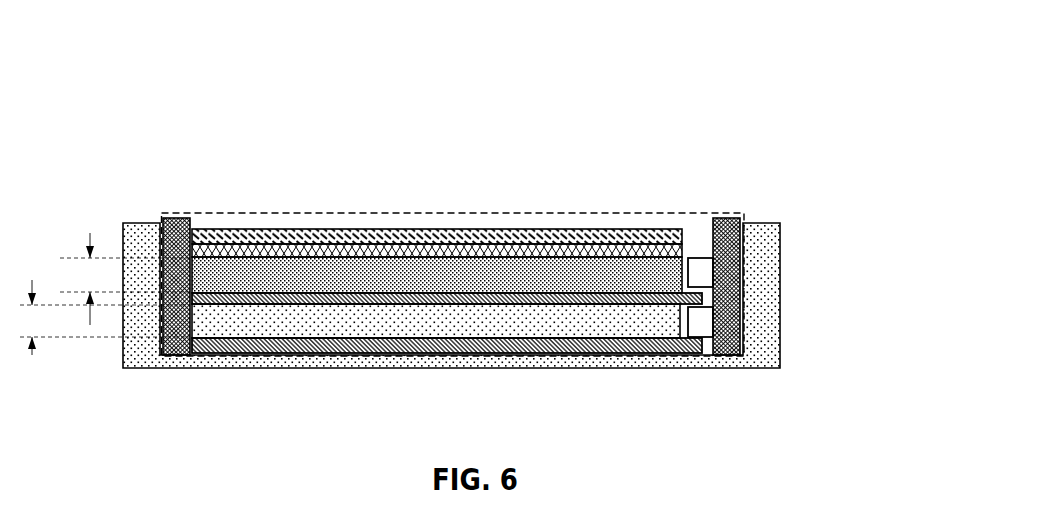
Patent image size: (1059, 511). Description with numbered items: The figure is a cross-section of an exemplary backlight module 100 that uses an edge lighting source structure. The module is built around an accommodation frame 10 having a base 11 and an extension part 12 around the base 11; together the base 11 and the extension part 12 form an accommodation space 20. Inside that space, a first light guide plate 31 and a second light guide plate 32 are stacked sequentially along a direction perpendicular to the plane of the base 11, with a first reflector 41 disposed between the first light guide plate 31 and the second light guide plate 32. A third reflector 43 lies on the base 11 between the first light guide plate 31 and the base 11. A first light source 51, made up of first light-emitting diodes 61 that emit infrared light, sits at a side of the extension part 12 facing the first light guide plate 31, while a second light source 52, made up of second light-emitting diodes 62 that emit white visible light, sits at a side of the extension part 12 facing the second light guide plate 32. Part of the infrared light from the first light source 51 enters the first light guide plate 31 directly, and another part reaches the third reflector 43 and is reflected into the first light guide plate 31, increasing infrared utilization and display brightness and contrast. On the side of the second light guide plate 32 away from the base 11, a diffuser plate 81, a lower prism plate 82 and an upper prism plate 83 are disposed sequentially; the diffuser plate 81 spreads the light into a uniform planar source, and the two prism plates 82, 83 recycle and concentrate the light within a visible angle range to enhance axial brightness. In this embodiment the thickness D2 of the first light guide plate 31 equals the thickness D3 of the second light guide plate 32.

The backlight module 100 is at (727, 42).
The accommodation frame 10 is at (518, 323).
The base 11 is at (703, 362).
The extension part 12 is at (772, 305).
The accommodation space 20 is at (510, 212).
The first light guide plate 31 is at (392, 323).
The second light guide plate 32 is at (223, 242).
The first reflector 41 is at (228, 305).
The third reflector 43 is at (313, 345).
The first light source 51 is at (702, 322).
The first light-emitting diodes 61 is at (640, 356).
The second light source 52 is at (702, 272).
The second light-emitting diodes 62 is at (747, 226).
The diffuser plate 81 is at (275, 243).
The lower prism plate 82 is at (333, 250).
The upper prism plate 83 is at (410, 238).
The thickness of the first light guide plate D2 is at (101, 317).
The thickness of the second light guide plate D3 is at (125, 279).